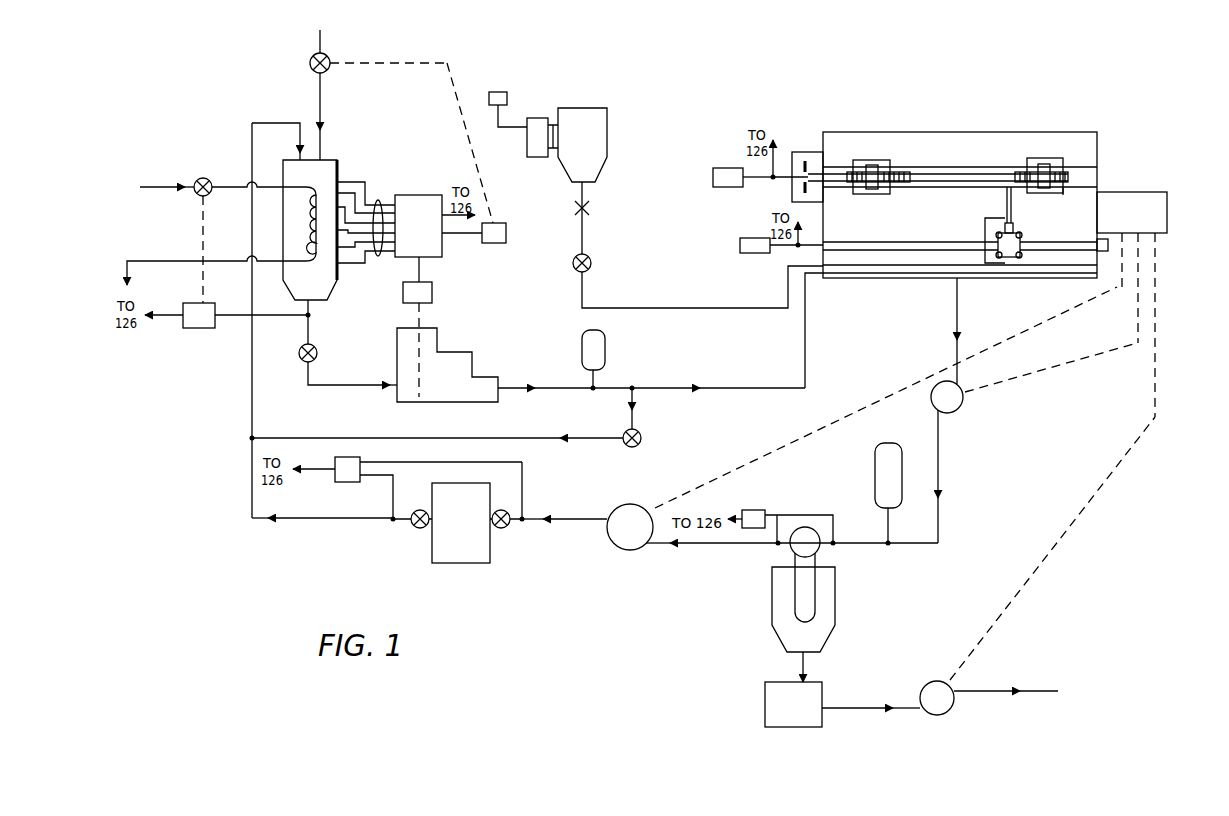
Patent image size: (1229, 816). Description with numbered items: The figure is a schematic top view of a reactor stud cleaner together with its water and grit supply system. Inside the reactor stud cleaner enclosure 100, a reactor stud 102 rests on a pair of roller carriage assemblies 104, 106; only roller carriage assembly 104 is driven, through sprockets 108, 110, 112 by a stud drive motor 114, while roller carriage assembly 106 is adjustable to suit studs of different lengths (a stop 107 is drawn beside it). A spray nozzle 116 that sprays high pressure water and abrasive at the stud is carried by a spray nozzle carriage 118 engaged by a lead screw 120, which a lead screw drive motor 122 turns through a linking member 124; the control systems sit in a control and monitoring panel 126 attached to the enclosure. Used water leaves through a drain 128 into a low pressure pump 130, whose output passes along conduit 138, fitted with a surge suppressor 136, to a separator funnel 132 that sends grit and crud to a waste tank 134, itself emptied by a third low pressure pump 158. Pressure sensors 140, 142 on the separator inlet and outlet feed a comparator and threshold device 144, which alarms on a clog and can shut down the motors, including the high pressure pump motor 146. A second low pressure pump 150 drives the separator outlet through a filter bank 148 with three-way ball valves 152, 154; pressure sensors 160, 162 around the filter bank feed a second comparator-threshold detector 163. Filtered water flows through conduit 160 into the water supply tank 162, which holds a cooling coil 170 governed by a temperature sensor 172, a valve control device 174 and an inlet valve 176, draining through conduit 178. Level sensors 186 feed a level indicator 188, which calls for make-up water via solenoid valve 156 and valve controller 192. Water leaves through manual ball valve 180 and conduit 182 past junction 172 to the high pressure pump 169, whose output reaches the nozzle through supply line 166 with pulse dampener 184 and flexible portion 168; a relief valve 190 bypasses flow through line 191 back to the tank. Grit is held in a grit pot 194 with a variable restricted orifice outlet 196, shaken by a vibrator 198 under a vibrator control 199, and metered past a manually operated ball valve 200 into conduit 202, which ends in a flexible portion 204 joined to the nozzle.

The reactor stud cleaner enclosure 100 is at (1108, 160).
The reactor stud 102 is at (945, 167).
The roller carriage assembly 104 is at (872, 160).
The roller carriage assembly 106 is at (1045, 158).
The stop 107 is at (1067, 194).
The sprocket 108 is at (810, 172).
The sprocket 110 is at (805, 160).
The sprocket 112 is at (801, 185).
The stud drive motor 114 is at (713, 168).
The spray nozzle 116 is at (1012, 205).
The spray nozzle carriage 118 is at (1010, 258).
The lead screw 120 is at (1065, 278).
The lead screw drive motor 122 is at (740, 245).
The linking member 124 is at (833, 245).
The control and monitoring panel 126 is at (1168, 215).
The drain 128 is at (957, 310).
The low pressure pump 130 is at (951, 413).
The separator funnel 132 is at (835, 603).
The waste tank 134 is at (822, 690).
The surge suppressor 136 is at (902, 468).
The conduit 138 is at (940, 520).
The pressure sensor 140 is at (834, 546).
The pressure sensor 142 is at (778, 548).
The comparator and threshold device 144 is at (755, 510).
The high pressure pump motor 146 is at (403, 295).
The filter bank 148 is at (432, 553).
The second low pressure pump 150 is at (614, 508).
The three-way ball valve 152 is at (492, 524).
The three-way ball valve 154 is at (430, 518).
The solenoid valve 156 is at (310, 62).
The third low pressure pump 158 is at (922, 686).
The pressure sensor / conduit 160 is at (252, 397).
The pressure sensor / water supply tank 162 is at (337, 158).
The second comparator-threshold detector 163 is at (358, 458).
The supply line 166 is at (806, 345).
The flexible portion 168 is at (880, 278).
The high pressure pump 169 is at (417, 400).
The cooler 170 is at (312, 187).
The temperature sensor 172 is at (306, 318).
The valve control device 174 is at (200, 328).
The valve 176 is at (219, 160).
The conduit 178 is at (127, 261).
The manual ball valve 180 is at (318, 353).
The conduit 182 is at (320, 386).
The pulse dampener 184 is at (606, 350).
The level sensors 186 is at (382, 201).
The level indicator 188 is at (419, 195).
The relief valve 190 is at (640, 444).
The line 191 is at (640, 408).
The valve controller 192 is at (506, 234).
The grit pot 194 is at (606, 84).
The variable restricted orifice outlet 196 is at (590, 210).
The vibrator 198 is at (542, 118).
The vibrator control 199 is at (509, 91).
The manually operated ball valve 200 is at (591, 261).
The conduit 202 is at (691, 291).
The flexible portion 204 is at (920, 265).